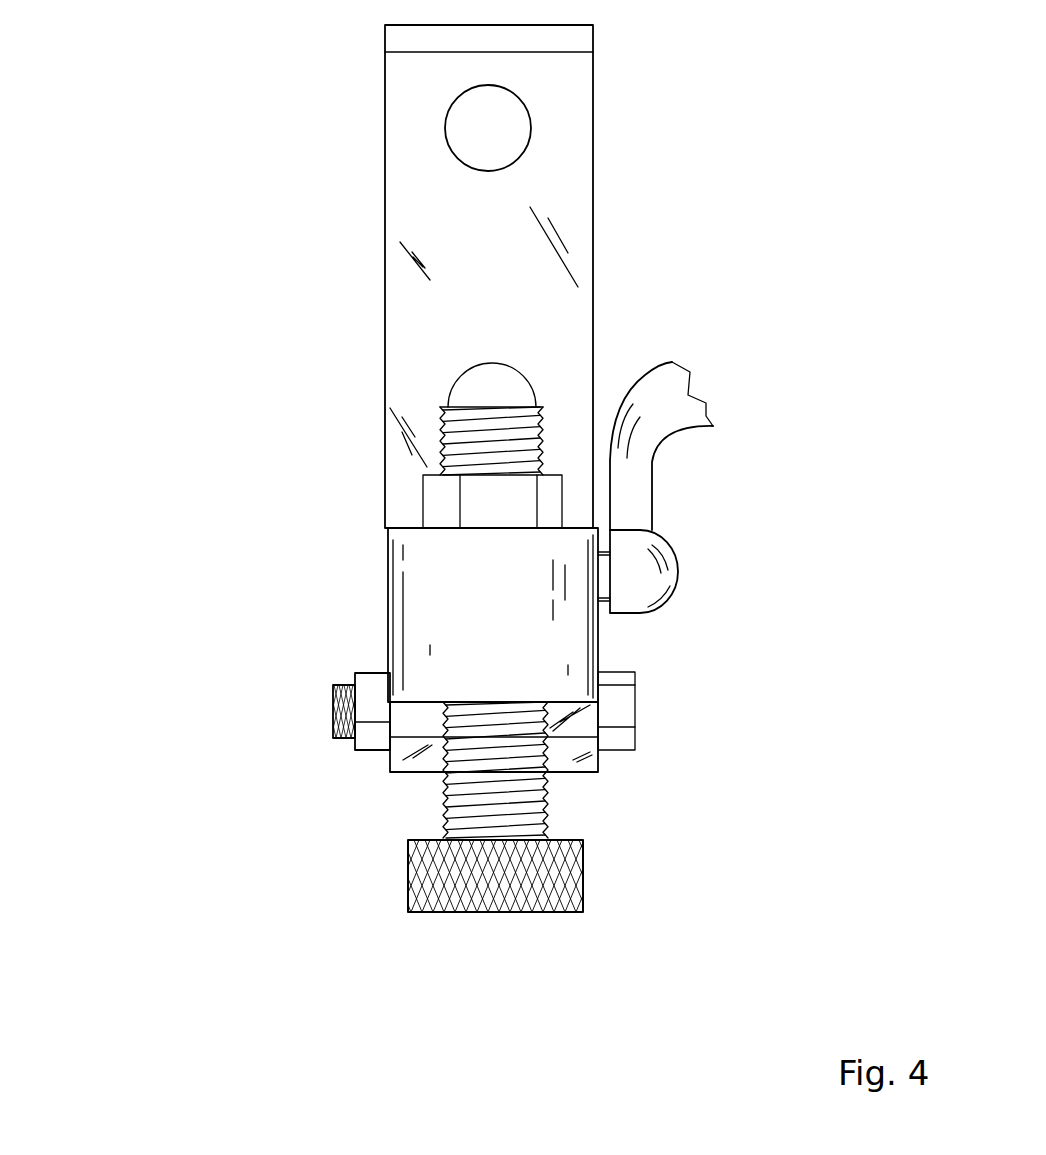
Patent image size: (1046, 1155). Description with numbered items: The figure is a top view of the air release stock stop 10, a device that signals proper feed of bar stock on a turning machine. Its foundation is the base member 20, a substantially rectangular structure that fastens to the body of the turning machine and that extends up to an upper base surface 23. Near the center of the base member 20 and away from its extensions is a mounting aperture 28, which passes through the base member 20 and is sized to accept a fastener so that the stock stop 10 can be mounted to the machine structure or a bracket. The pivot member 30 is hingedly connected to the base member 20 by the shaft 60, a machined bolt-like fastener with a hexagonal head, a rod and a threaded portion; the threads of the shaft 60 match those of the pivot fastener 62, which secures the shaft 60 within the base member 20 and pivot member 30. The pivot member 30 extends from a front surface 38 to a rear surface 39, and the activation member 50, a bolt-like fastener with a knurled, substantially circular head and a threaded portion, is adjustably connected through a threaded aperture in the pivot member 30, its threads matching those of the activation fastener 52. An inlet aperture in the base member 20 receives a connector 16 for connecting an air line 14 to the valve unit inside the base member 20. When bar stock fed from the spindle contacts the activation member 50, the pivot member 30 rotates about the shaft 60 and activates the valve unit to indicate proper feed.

The air release stock stop 10 is at (240, 486).
The base member 20 is at (378, 127).
The upper base surface 23 is at (465, 283).
The mounting aperture 28 is at (508, 140).
The activation fastener 52 is at (423, 492).
The rear surface 39 is at (408, 528).
The pivot member 30 is at (373, 591).
The air line 14 is at (650, 428).
The connector 16 is at (635, 582).
The front surface 38 is at (567, 703).
The shaft 60 is at (320, 707).
The pivot fastener 62 is at (363, 752).
The activation member 50 is at (395, 877).